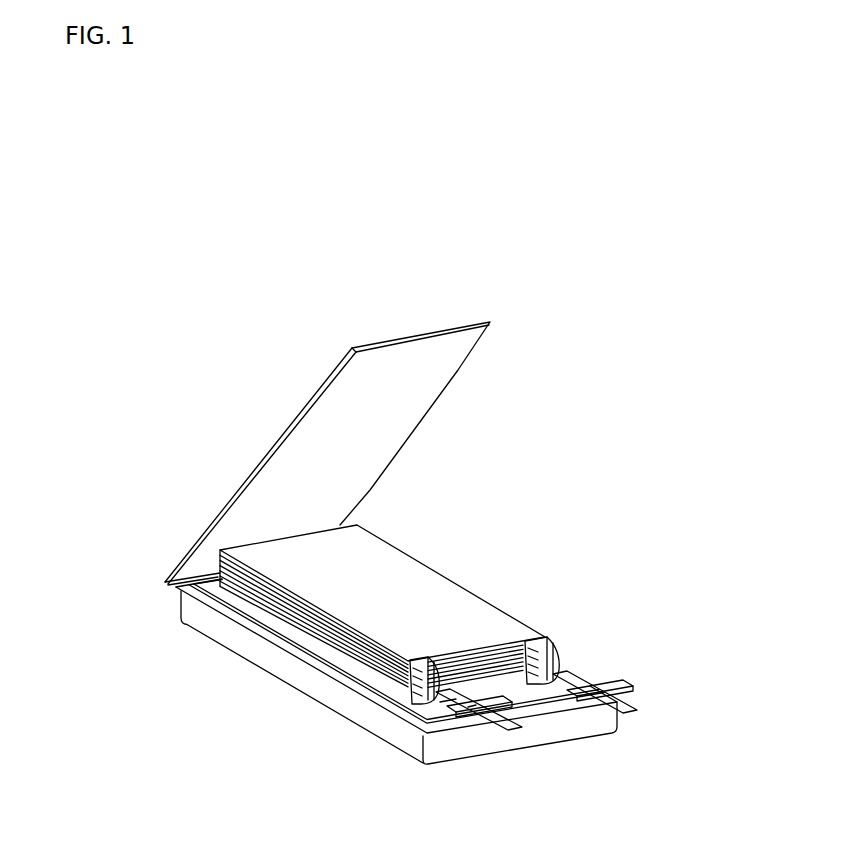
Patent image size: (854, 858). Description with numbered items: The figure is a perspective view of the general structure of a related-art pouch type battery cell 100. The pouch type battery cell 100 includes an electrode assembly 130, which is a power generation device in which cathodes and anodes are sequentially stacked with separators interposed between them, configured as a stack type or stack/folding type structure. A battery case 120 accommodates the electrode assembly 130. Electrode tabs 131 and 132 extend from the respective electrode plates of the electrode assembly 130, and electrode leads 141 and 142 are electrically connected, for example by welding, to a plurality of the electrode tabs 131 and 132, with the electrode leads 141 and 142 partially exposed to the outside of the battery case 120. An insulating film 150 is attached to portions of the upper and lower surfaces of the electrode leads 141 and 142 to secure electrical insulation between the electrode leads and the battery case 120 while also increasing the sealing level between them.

The pouch type battery cell 100 is at (442, 258).
The battery case 120 is at (166, 583).
The electrode assembly 130 is at (495, 553).
The electrode tab 131 is at (405, 692).
The electrode tab 132 is at (560, 650).
The electrode lead 141 is at (458, 698).
The electrode lead 142 is at (587, 672).
The insulating film 150 is at (458, 724).